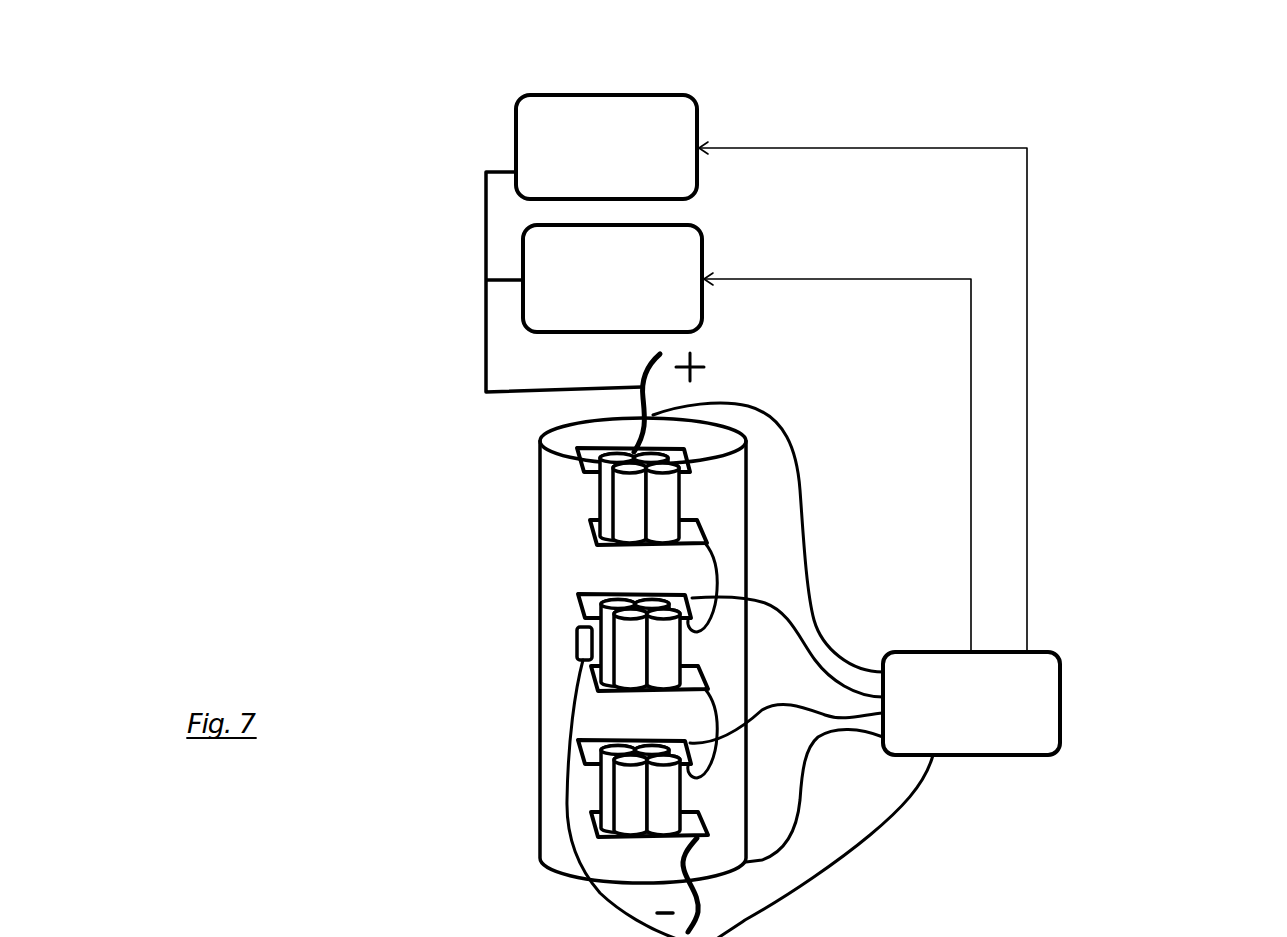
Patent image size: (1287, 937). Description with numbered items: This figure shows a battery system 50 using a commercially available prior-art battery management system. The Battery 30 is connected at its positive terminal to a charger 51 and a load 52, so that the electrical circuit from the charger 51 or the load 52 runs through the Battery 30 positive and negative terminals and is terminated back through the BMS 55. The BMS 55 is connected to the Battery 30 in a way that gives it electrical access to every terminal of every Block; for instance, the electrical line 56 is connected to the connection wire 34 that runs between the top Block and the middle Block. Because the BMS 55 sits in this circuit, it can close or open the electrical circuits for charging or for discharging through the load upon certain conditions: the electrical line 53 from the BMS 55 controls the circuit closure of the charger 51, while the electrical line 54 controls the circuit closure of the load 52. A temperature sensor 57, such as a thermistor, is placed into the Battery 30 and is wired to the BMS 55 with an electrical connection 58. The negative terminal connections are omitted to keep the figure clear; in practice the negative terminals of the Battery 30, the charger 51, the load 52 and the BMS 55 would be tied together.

The battery system 50 is at (1176, 98).
The charger 51 is at (498, 98).
The load 52 is at (517, 242).
The electrical line 53 is at (918, 137).
The electrical line 54 is at (916, 268).
The BMS 55 is at (1082, 660).
The Battery 30 is at (533, 618).
The connection wire 34 is at (715, 553).
The electrical line 56 is at (767, 590).
The temperature sensor 57 is at (573, 652).
The electrical connection 58 is at (917, 802).